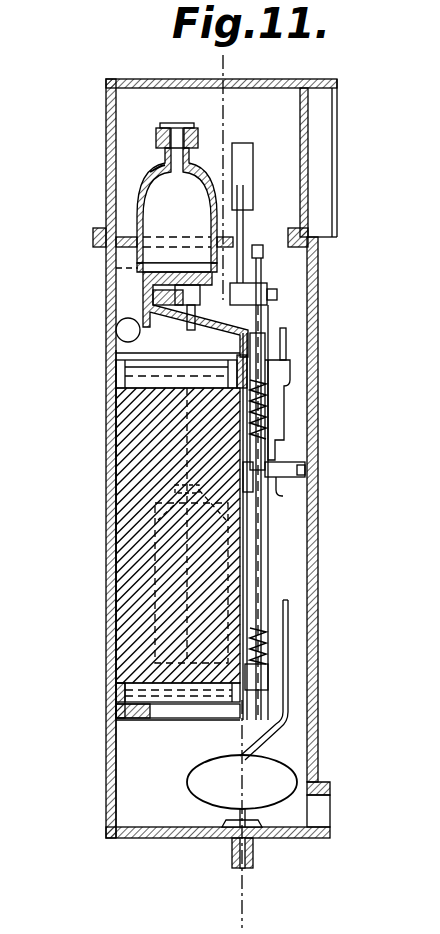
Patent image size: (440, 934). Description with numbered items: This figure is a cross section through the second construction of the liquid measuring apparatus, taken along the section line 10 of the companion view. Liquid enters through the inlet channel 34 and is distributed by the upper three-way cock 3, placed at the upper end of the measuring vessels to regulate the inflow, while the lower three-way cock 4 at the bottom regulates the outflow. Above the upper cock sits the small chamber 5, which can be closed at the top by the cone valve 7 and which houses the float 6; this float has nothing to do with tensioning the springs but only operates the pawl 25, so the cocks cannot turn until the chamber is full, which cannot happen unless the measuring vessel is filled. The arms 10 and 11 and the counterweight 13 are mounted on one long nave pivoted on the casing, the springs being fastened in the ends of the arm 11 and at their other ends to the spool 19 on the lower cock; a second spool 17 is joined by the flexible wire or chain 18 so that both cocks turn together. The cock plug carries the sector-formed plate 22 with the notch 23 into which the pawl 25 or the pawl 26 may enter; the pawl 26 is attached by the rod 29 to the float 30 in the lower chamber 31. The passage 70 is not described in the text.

The three-way cock 3 is at (140, 388).
The three-way cock 4 is at (200, 712).
The chamber 5 is at (116, 174).
The float 6 is at (150, 210).
The cone valve 7 is at (155, 168).
The arm 10 is at (207, 65).
The arm 11 is at (262, 320).
The counterweight 13 is at (248, 160).
The spool 17 is at (275, 345).
The flexible wire or chain 18 is at (262, 610).
The spool 19 is at (268, 668).
The sector-formed plate 22 is at (282, 420).
The notch 23 is at (290, 462).
The pawl 25 is at (286, 480).
The pawl 26 is at (280, 496).
The rod 29 is at (288, 690).
The float 30 is at (242, 782).
The chamber 31 is at (215, 473).
The inlet channel 34 is at (128, 330).
The passage 70 is at (190, 315).